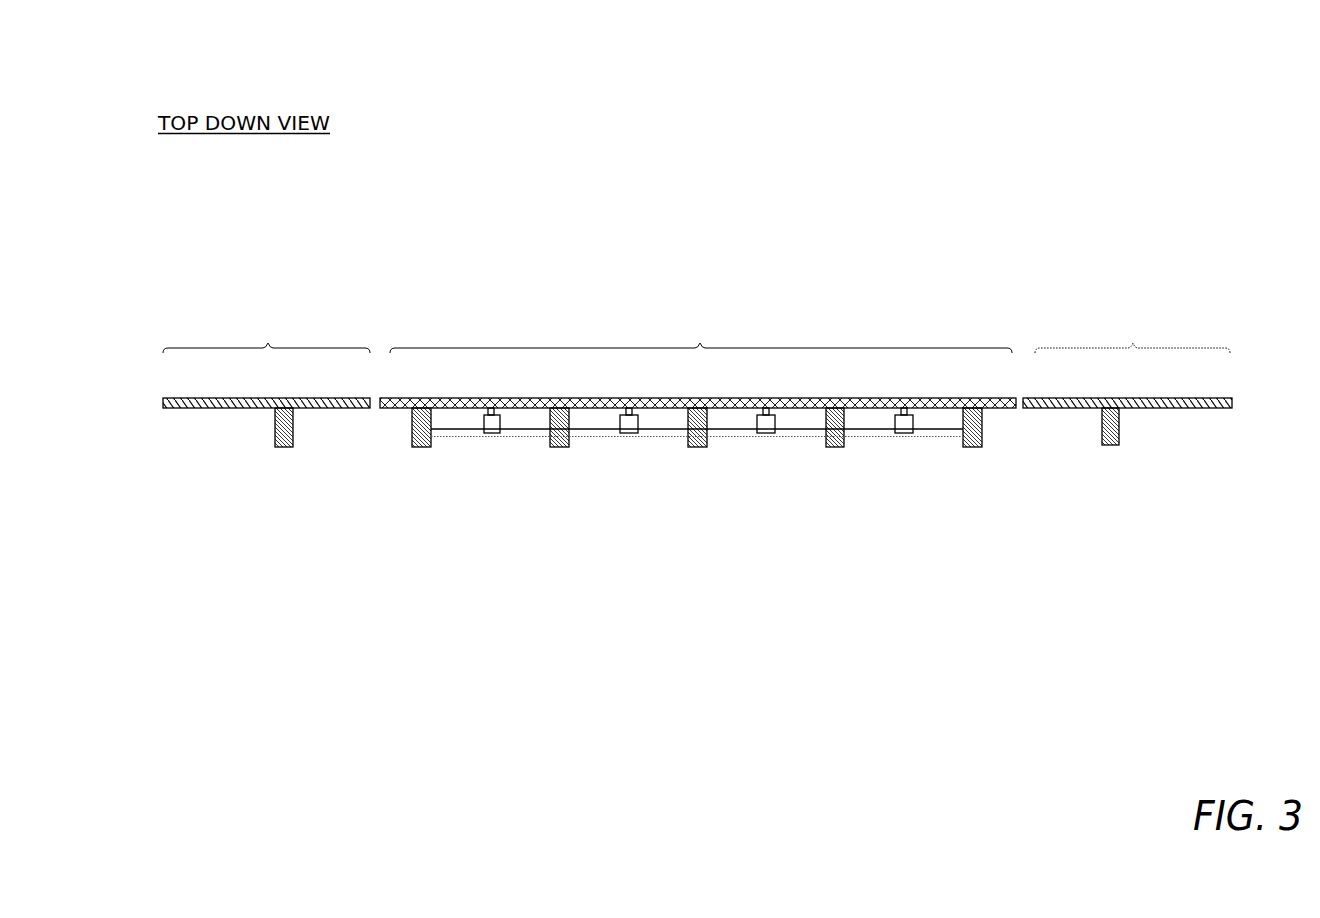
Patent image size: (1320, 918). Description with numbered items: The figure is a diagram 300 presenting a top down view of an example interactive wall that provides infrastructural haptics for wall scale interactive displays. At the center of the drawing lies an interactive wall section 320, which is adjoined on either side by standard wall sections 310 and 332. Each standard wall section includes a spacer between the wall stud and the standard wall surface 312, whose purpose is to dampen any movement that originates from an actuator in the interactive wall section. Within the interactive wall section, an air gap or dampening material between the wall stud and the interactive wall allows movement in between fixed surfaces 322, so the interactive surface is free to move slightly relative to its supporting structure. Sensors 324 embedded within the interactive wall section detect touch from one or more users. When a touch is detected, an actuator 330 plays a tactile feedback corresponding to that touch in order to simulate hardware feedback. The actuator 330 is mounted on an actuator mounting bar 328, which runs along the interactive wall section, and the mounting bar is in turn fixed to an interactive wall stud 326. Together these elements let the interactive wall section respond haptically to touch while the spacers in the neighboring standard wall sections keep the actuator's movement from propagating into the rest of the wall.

The diagram 300 is at (1200, 58).
The standard wall section 310 is at (1142, 246).
The spacer between the wall stud and the standard wall surface 312 is at (1110, 412).
The interactive wall section 320 is at (750, 257).
The air gap or dampening material allowing movement in between fixed surfaces 322 is at (835, 410).
The sensors 324 is at (781, 400).
The interactive wall stud 326 is at (697, 428).
The actuator mounting bar 328 is at (490, 438).
The actuator 330 is at (487, 420).
The standard wall section 332 is at (280, 254).